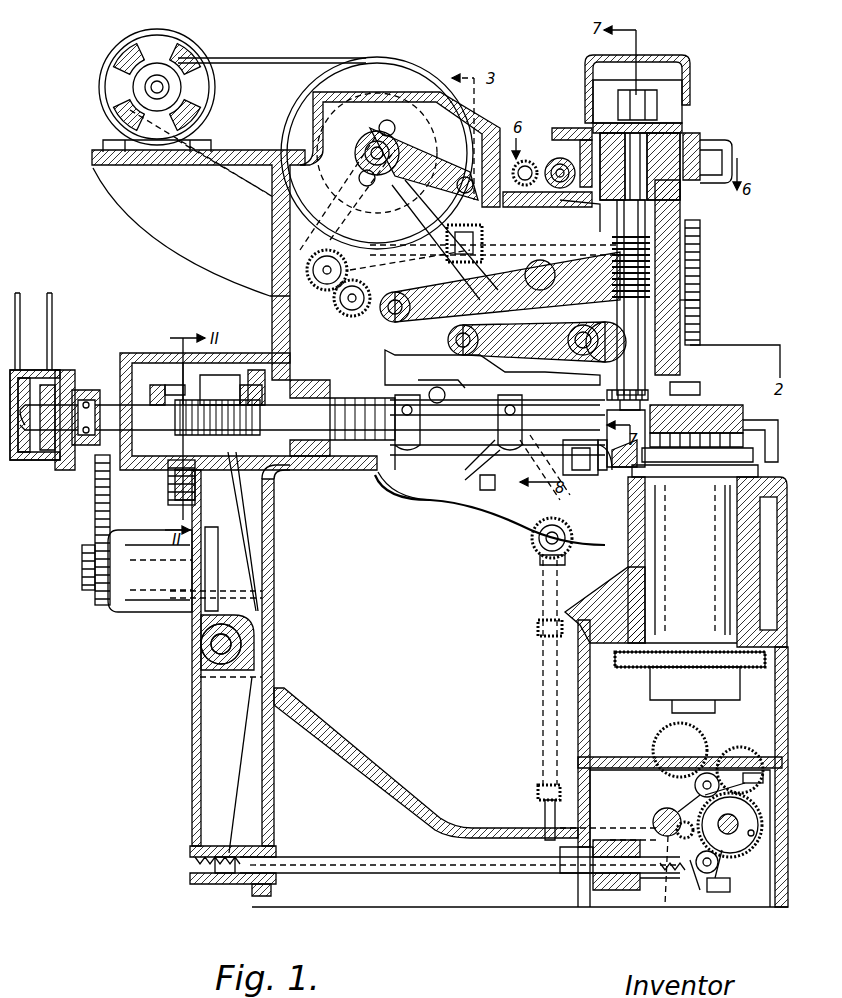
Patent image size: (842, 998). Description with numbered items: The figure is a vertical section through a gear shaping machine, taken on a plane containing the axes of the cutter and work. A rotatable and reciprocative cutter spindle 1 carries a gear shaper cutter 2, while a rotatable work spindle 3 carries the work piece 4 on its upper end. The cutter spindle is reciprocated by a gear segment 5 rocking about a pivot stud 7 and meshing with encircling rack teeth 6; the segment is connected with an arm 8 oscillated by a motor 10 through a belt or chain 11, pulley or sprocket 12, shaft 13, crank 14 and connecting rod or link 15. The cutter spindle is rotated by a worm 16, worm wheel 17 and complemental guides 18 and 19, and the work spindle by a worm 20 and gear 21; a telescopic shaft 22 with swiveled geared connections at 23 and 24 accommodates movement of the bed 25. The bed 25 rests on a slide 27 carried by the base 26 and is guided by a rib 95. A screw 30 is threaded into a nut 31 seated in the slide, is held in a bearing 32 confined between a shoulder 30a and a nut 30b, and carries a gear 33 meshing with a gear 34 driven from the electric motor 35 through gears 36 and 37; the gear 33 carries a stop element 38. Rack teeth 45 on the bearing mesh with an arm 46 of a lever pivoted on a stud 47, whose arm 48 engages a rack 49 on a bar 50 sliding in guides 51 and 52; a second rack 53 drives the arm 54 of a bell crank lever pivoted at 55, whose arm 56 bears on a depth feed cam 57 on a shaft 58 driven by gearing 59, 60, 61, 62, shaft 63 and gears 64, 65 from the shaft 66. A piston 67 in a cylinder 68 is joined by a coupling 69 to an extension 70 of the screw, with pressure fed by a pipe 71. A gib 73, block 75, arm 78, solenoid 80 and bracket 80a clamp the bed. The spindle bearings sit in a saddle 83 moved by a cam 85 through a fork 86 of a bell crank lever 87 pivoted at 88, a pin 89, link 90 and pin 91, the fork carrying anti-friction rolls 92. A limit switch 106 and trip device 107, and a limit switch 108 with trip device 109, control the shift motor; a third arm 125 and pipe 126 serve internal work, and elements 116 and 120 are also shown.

The cutter spindle 1 is at (680, 352).
The gear shaper cutter 2 is at (655, 400).
The work spindle 3 is at (650, 540).
The work piece 4 is at (735, 405).
The gear segment 5 is at (590, 248).
The rack teeth 6 is at (700, 270).
The pivot stud 7 is at (580, 232).
The arm 8 is at (382, 322).
The motor 10 is at (172, 42).
The belt or chain 11 is at (266, 58).
The pulley or sprocket 12 is at (300, 124).
The shaft 13 is at (340, 190).
The crank 14 is at (400, 210).
The connecting rod or link 15 is at (338, 294).
The worm 16 is at (565, 118).
The worm wheel 17 is at (725, 150).
The guide 18 is at (695, 133).
The guide 19 is at (660, 135).
The worm 20 is at (655, 700).
The gear 21 is at (650, 667).
The telescopic shaft 22 is at (452, 388).
The swiveled geared connection 23 is at (450, 240).
The swiveled geared connection 24 is at (535, 550).
The bed 25 is at (268, 300).
The base 26 is at (420, 508).
The slide 27 is at (305, 470).
The screw 30 is at (350, 465).
The shoulder 30a is at (250, 386).
The nut 30b is at (150, 390).
The nut 31 is at (305, 488).
The bearing 32 is at (220, 387).
The gear 33 is at (183, 362).
The gear 34 is at (224, 518).
The electric motor 35 is at (145, 612).
The gear 36 is at (82, 565).
The gear 37 is at (95, 525).
The stop element 38 is at (175, 385).
The rack teeth 45 is at (230, 470).
The arm 46 is at (195, 485).
The stud 47 is at (201, 655).
The arm 48 is at (195, 848).
The rack 49 is at (218, 875).
The bar 50 is at (405, 857).
The guide 51 is at (285, 848).
The guide 52 is at (620, 890).
The rack 53 is at (708, 895).
The arm 54 is at (655, 880).
The pivot 55 is at (665, 822).
The arm 56 is at (715, 875).
The depth feed cam 57 is at (745, 880).
The shaft 58 is at (755, 855).
The gearing 59 is at (752, 770).
The gearing 60 is at (695, 735).
The gearing 61 is at (745, 750).
The gearing 62 is at (668, 912).
The shaft 63 is at (610, 819).
The gear 64 is at (545, 812).
The gear 65 is at (536, 785).
The shaft 66 is at (540, 706).
The piston 67 is at (42, 468).
The cylinder 68 is at (22, 465).
The coupling 69 is at (80, 470).
The extension 70 is at (108, 410).
The pipe 71 is at (55, 320).
The gib 73 is at (500, 458).
The block 75 is at (615, 471).
The arm 78 is at (540, 482).
The solenoid 80 is at (590, 478).
The bracket 80a is at (615, 479).
The saddle 83 is at (700, 335).
The cam 85 is at (370, 130).
The fork 86 is at (430, 160).
The bell crank lever 87 is at (495, 236).
The pivot 88 is at (440, 195).
The pin 89 is at (448, 338).
The link 90 is at (548, 296).
The pin 91 is at (586, 324).
The anti-friction rolls 92 is at (400, 130).
The rib 95 is at (385, 370).
The limit switch 106 is at (394, 502).
The trip device 107 is at (430, 455).
The limit switch 108 is at (485, 508).
The trip device 109 is at (499, 471).
The collar 116 is at (255, 370).
The bar 120 is at (455, 440).
The third arm 125 is at (675, 810).
The pipe 126 is at (42, 290).